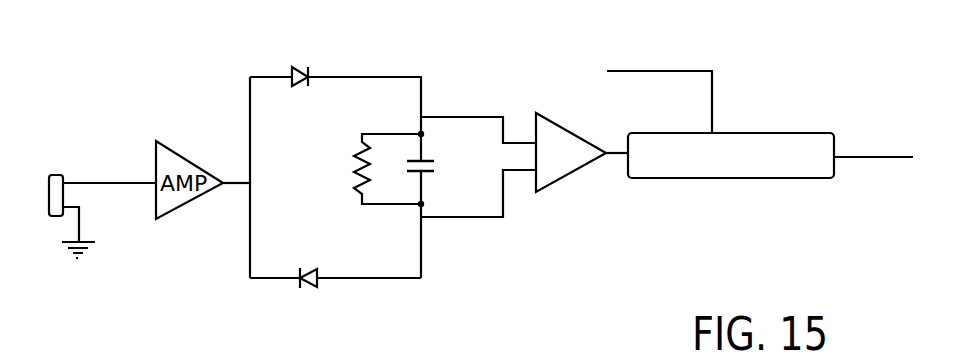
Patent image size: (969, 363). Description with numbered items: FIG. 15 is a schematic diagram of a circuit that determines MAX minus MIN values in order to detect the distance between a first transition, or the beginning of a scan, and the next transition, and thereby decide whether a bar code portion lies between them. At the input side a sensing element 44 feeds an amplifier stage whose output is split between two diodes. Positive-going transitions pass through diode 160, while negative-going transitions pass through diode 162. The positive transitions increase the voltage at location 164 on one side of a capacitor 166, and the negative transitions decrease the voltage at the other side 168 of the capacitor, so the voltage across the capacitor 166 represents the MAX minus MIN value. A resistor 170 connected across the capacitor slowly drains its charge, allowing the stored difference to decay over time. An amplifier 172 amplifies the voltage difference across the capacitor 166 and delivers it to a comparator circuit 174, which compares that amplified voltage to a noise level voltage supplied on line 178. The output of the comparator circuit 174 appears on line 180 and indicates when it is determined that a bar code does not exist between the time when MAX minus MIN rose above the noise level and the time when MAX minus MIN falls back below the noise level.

The sensor 44 is at (63, 175).
The diode 160 is at (300, 67).
The diode 162 is at (312, 287).
The location 164 is at (421, 134).
The capacitor 166 is at (477, 153).
The other side of the capacitor 168 is at (421, 204).
The resistor 170 is at (353, 173).
The amplifier 172 is at (577, 133).
The comparator circuit 174 is at (715, 178).
The line 178 is at (607, 157).
The line 180 is at (867, 157).